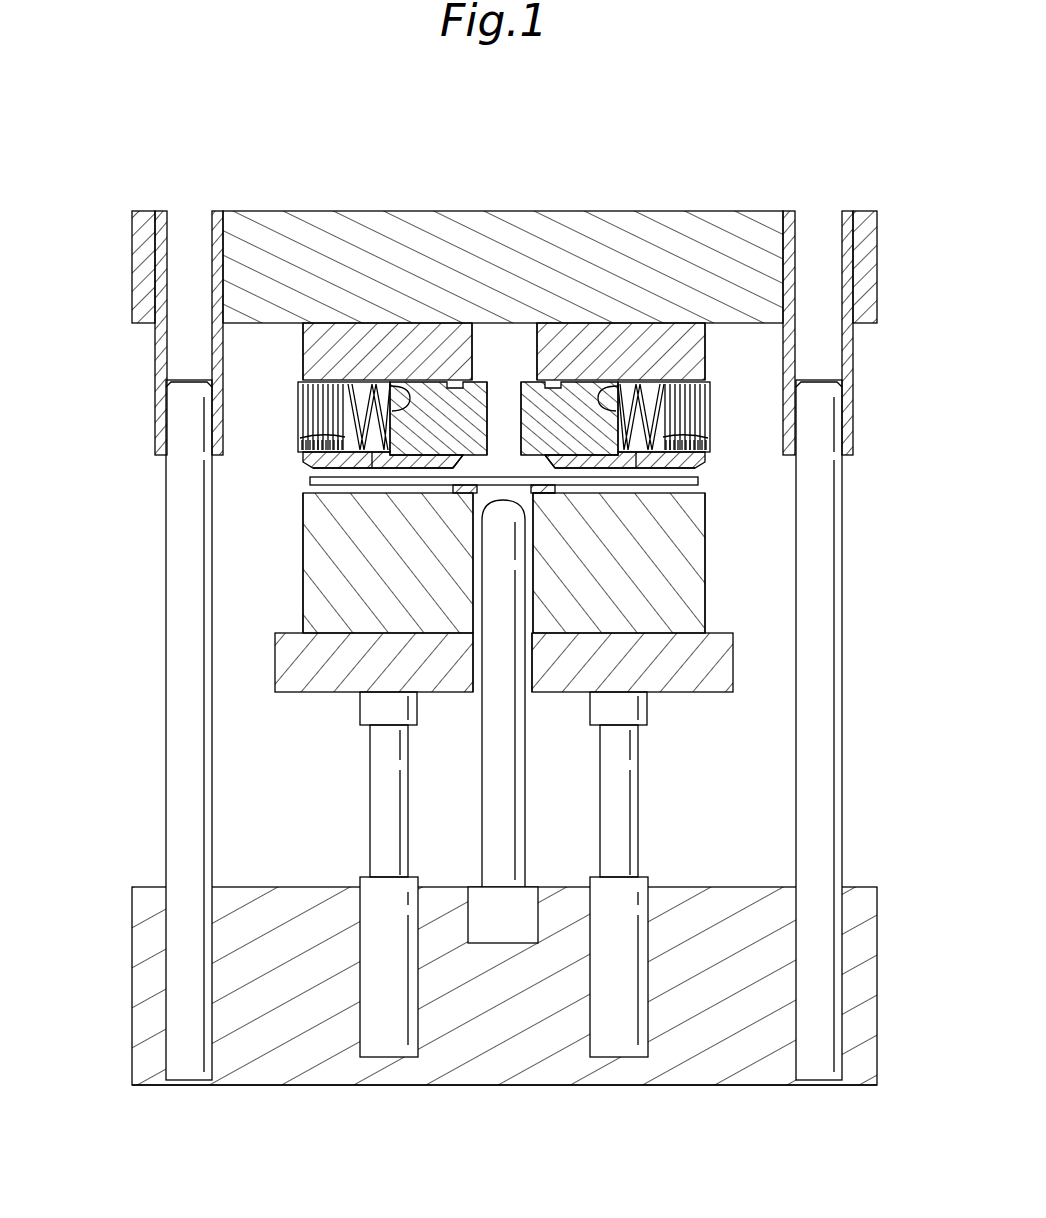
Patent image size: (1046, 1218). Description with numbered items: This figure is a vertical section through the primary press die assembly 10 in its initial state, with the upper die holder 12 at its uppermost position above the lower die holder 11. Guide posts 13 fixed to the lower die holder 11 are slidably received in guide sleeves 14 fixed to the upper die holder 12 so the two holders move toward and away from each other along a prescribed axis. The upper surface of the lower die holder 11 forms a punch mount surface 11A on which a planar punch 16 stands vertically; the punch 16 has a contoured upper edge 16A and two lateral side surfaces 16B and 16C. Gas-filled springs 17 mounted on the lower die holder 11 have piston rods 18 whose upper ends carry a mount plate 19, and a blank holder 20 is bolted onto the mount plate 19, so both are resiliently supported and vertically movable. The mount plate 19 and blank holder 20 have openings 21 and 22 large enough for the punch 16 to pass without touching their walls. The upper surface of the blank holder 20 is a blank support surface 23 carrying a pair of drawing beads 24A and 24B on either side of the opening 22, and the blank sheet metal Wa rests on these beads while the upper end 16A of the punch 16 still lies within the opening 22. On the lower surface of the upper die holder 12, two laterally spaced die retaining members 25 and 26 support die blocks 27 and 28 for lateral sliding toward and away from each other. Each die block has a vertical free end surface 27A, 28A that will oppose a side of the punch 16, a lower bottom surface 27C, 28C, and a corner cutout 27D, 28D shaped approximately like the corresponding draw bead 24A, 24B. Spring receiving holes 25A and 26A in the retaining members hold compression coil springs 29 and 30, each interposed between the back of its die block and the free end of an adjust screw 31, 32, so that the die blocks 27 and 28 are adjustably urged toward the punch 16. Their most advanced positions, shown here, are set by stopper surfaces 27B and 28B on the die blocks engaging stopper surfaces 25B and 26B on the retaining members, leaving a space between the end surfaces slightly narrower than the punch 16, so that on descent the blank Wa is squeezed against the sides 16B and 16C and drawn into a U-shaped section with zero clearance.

The primary press die assembly 10 is at (136, 657).
The lower die holder 11 is at (147, 977).
The punch mount surface 11A is at (557, 887).
The upper die holder 12 is at (135, 265).
The guide post 13 is at (178, 798).
The guide sleeve 14 is at (158, 362).
The punch 16 is at (515, 763).
The upper edge of the punch 16A is at (560, 510).
The lateral side surface of the punch 16B is at (473, 565).
The lateral side surface of the punch 16C is at (533, 572).
The gas-filled spring 17 is at (368, 890).
The piston rod 18 is at (385, 778).
The mount plate 19 is at (687, 682).
The blank holder 20 is at (673, 615).
The opening of the mount plate 21 is at (493, 667).
The opening of the blank holder 22 is at (462, 505).
The blank support surface 23 is at (333, 467).
The drawing bead 24A is at (455, 500).
The drawing bead 24B is at (555, 500).
The die retaining member 25 is at (337, 377).
The spring receiving hole 25A is at (350, 445).
The stopper surface 25B is at (440, 413).
The die retaining member 26 is at (673, 340).
The spring receiving hole 26A is at (673, 343).
The stopper surface 26B is at (590, 372).
The die block 27 is at (497, 400).
The free end surface 27A is at (490, 387).
The stopper surface 27B is at (400, 398).
The lower bottom surface 27C is at (448, 470).
The cutout 27D is at (440, 485).
The die block 28 is at (600, 413).
The free end surface 28A is at (567, 417).
The stopper surface 28B is at (610, 398).
The lower bottom surface 28C is at (560, 472).
The cutout 28D is at (568, 485).
The compression coil spring 29 is at (330, 367).
The compression coil spring 30 is at (660, 445).
The adjust screw 31 is at (313, 397).
The adjust screw 32 is at (698, 394).
The blank sheet metal Wa is at (700, 480).